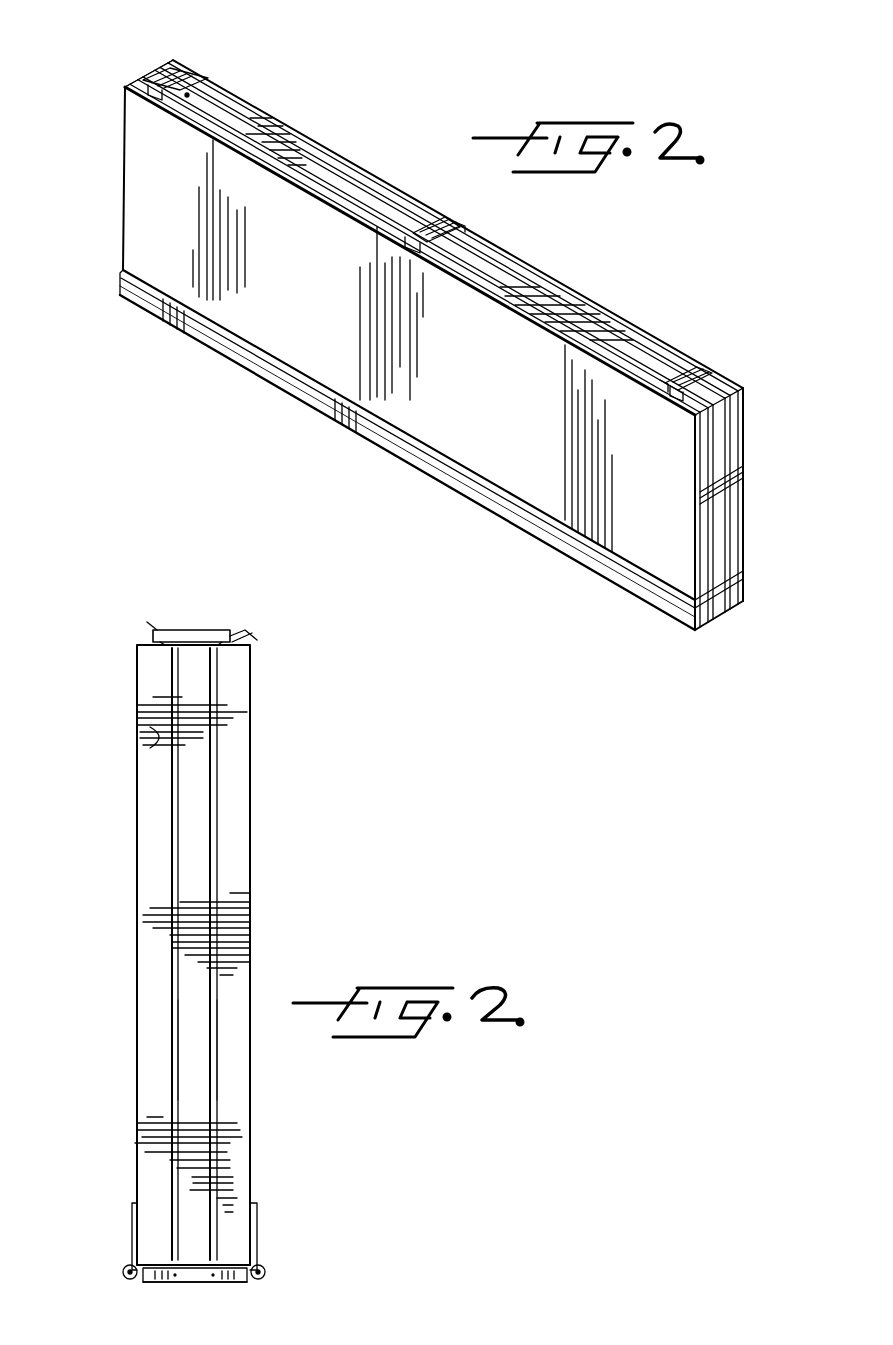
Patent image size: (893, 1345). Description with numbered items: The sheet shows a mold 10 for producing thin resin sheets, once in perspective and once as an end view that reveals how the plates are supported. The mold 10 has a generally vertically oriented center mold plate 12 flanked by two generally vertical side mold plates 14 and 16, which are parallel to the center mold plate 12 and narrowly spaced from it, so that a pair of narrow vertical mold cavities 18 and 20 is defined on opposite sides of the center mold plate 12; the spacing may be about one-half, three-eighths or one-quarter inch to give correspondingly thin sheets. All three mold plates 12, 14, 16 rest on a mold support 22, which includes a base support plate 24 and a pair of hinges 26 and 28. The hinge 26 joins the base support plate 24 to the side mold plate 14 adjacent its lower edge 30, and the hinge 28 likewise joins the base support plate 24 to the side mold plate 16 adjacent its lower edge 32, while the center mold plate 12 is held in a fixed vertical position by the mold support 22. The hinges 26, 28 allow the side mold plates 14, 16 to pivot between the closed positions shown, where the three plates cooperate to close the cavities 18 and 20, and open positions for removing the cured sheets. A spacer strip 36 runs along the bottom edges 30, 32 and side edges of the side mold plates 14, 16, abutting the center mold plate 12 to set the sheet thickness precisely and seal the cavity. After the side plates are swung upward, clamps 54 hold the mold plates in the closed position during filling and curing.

In FIG. 1, the mold 10 is at (642, 300).
In FIG. 2, the mold 10 is at (275, 737).
In FIG. 1, the center mold plate 12 is at (320, 173).
In FIG. 2, the center mold plate 12 is at (193, 673).
In FIG. 1, the side mold plate 14 is at (357, 213).
In FIG. 2, the side mold plate 14 is at (148, 732).
In FIG. 1, the side mold plate 16 is at (403, 202).
In FIG. 2, the side mold plate 16 is at (227, 688).
In FIG. 1, the mold cavity 18 is at (655, 374).
In FIG. 1, the mold cavity 20 is at (678, 365).
In FIG. 1, the mold support 22 is at (736, 632).
In FIG. 2, the mold support 22 is at (242, 1292).
In FIG. 1, the base support plate 24 is at (725, 620).
In FIG. 2, the base support plate 24 is at (187, 1276).
In FIG. 1, the hinge 26 is at (660, 607).
In FIG. 2, the hinge 26 is at (124, 1276).
In FIG. 1, the hinge 28 is at (743, 600).
In FIG. 2, the hinge 28 is at (266, 1273).
In FIG. 2, the lower edge 30 is at (150, 1263).
In FIG. 2, the lower edge 32 is at (230, 1262).
In FIG. 2, the spacer strip 36 is at (178, 820).
In FIG. 1, the clamp 54 is at (167, 78).
In FIG. 2, the clamp 54 is at (208, 632).